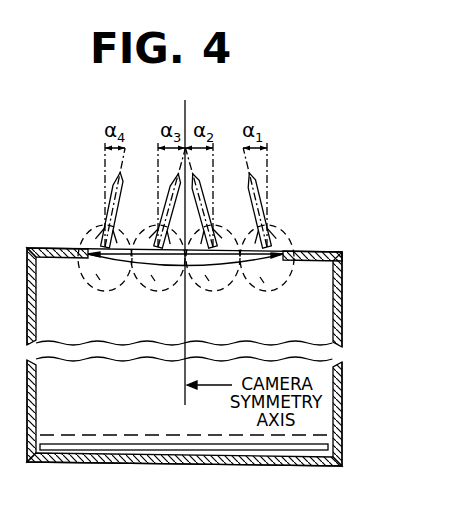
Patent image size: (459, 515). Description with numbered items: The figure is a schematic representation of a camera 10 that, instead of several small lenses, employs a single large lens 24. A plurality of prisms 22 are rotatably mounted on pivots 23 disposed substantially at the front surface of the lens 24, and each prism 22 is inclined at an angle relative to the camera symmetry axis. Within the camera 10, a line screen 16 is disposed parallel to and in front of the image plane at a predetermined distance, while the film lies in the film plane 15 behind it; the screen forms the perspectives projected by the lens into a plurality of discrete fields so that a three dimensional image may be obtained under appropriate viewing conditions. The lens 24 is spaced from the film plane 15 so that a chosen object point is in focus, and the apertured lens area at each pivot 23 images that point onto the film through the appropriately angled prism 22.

The camera 10 is at (343, 385).
The film plane 15 is at (118, 447).
The line screen 16 is at (110, 432).
The prisms 22 is at (254, 207).
The pivots 23 is at (230, 294).
The single large lens 24 is at (203, 268).